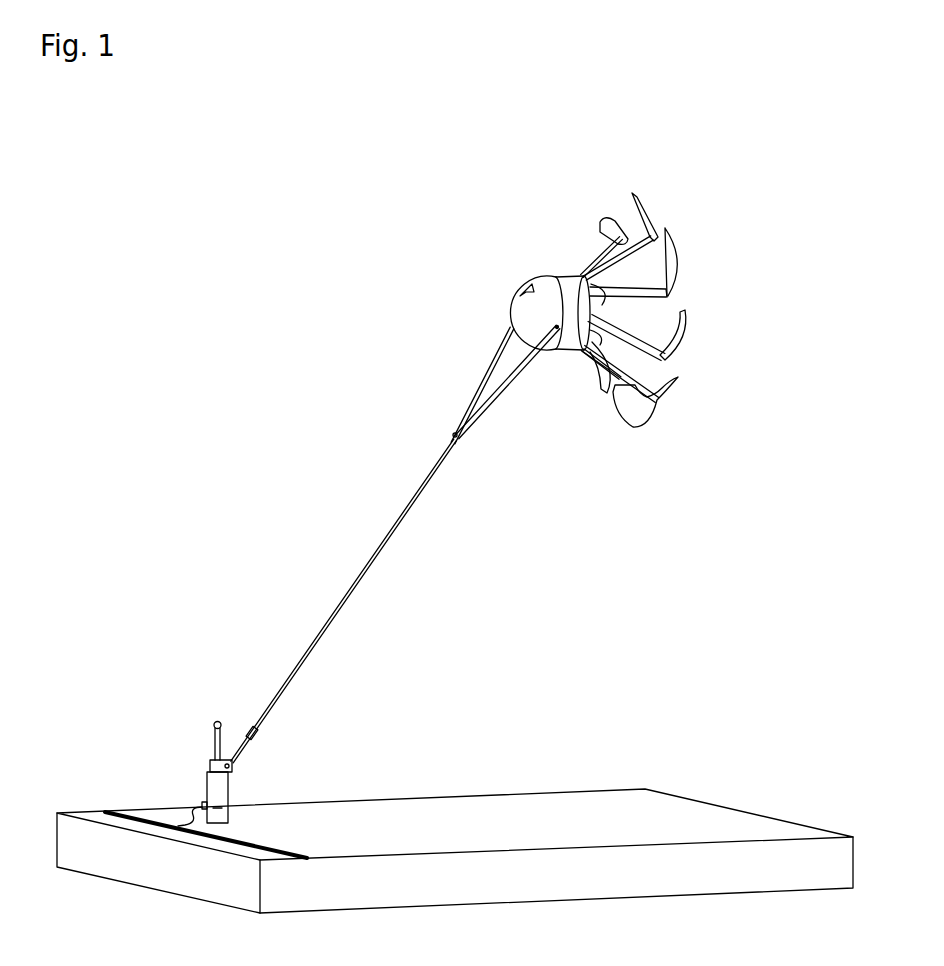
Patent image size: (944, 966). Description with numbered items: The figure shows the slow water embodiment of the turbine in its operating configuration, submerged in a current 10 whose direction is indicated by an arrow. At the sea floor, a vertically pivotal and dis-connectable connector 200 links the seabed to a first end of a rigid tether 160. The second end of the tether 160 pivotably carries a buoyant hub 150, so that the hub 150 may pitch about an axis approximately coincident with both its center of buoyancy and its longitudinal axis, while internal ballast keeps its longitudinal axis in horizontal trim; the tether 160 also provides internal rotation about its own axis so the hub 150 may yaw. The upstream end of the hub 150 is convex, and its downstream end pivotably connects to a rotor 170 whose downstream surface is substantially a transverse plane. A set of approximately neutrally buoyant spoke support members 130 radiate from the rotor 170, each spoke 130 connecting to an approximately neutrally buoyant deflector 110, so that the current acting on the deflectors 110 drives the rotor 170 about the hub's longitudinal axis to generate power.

The current 10 is at (268, 218).
The deflector 110 is at (709, 331).
The spoke support member 130 is at (649, 307).
The buoyant hub 150 is at (491, 285).
The rotor 170 is at (561, 256).
The rigid tether 160 is at (398, 470).
The connector 200 is at (164, 739).